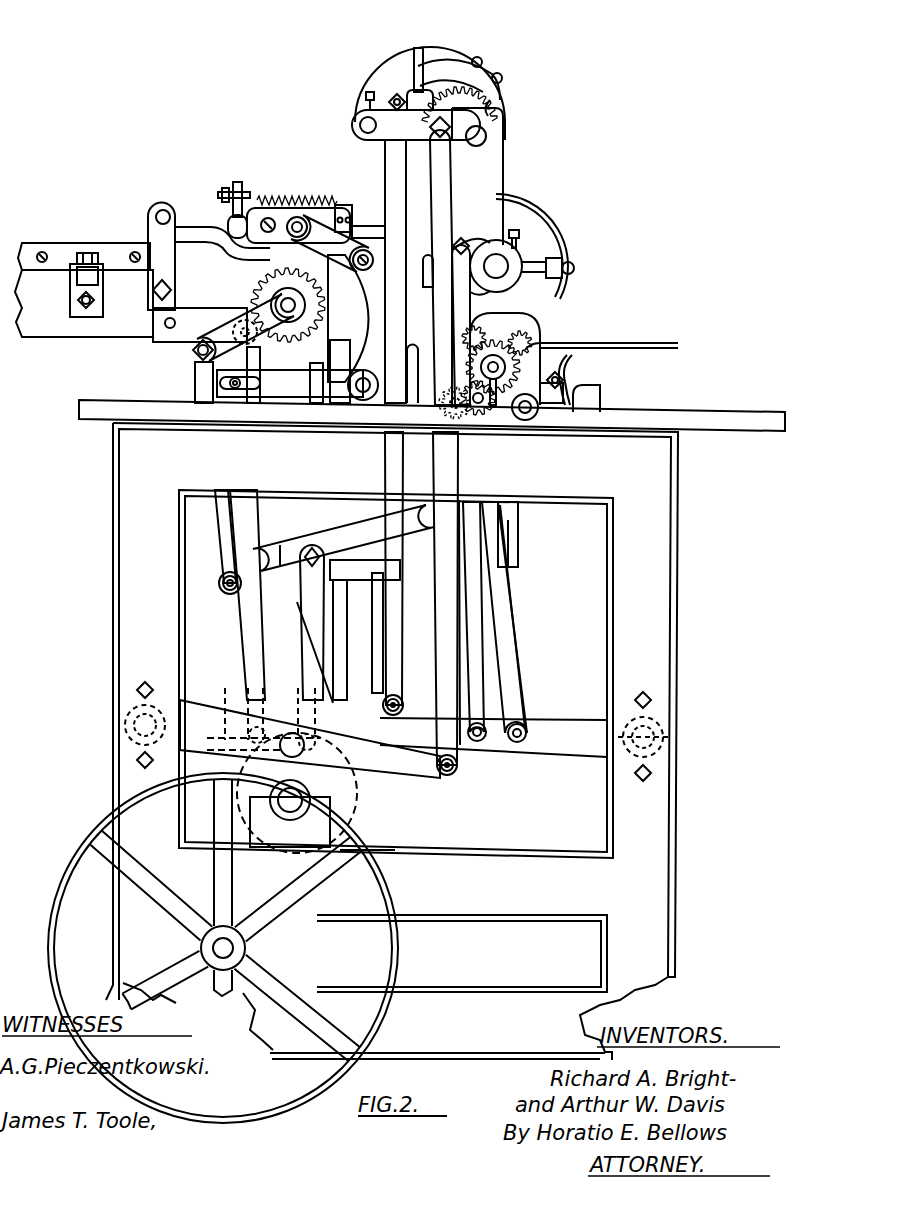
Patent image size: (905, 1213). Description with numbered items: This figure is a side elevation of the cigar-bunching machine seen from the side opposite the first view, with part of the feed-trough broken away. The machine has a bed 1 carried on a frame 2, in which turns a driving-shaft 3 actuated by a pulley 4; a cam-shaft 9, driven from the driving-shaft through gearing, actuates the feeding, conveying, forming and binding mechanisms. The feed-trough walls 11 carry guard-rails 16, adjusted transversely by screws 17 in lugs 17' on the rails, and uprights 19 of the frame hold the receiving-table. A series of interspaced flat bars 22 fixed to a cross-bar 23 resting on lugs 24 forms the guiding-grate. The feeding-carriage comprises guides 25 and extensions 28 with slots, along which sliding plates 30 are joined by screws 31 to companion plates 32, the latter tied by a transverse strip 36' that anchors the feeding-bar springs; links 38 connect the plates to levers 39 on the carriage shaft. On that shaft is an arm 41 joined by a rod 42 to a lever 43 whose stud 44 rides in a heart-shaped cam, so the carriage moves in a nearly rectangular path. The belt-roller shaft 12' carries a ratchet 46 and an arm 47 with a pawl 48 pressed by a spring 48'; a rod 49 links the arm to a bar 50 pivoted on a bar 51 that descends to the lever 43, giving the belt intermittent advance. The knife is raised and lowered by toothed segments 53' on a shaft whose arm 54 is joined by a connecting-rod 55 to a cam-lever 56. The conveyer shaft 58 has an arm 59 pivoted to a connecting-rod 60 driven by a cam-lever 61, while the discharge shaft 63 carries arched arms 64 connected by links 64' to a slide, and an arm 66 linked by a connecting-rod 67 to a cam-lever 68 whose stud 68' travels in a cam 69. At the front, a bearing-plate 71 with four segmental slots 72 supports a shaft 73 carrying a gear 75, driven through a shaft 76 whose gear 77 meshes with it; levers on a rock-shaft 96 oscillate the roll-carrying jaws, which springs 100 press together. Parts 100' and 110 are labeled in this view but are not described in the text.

The bed 1 is at (745, 414).
The frame 2 is at (114, 595).
The driving-shaft 3 is at (233, 948).
The pulley 4 is at (75, 862).
The cam-shaft 9 is at (288, 805).
The walls 11 is at (45, 318).
The shaft 12' is at (275, 297).
The guard-rail 16 is at (36, 243).
The screws 17 is at (83, 219).
The lugs 17' is at (73, 249).
The uprights 19 is at (497, 145).
The flat bars 22 is at (190, 230).
The cross-bar 23 is at (160, 208).
The lugs 24 is at (155, 235).
The guides 25 is at (340, 512).
The extensions or guides 28 is at (245, 200).
The sliding plates 30 is at (230, 228).
The screws 31 is at (275, 218).
The sliding plates 32 is at (322, 198).
The transverse strip 36' is at (360, 206).
The links 38 is at (345, 275).
The levers 39 is at (375, 320).
The arm 41 is at (305, 395).
The rod 42 is at (250, 626).
The lever 43 is at (222, 700).
The stud 44 is at (213, 742).
The ratchet 46 is at (300, 320).
The arm 47 is at (196, 355).
The pawl 48 is at (200, 311).
The spring 48' is at (217, 322).
The rod 49 is at (225, 527).
The bar 50 is at (284, 540).
The bar 51 is at (305, 633).
The toothed segments 53' is at (513, 101).
The arm 54 is at (412, 98).
The connecting-rod 55 is at (400, 290).
The cam-lever 56 is at (333, 703).
The shaft 58 is at (500, 267).
The arm 59 is at (518, 218).
The connecting-rod 60 is at (472, 625).
The cam-lever 61 is at (462, 740).
The shaft 63 is at (364, 120).
The arched arms 64 is at (431, 73).
The links 64' is at (513, 54).
The arm 66 is at (400, 128).
The connecting-rod 67 is at (440, 210).
The cam-lever 68 is at (318, 760).
The stud 68' is at (324, 793).
The cam 69 is at (380, 843).
The bearing-plate 71 is at (520, 343).
The segmental slots 72 is at (497, 367).
The shaft 73 is at (570, 358).
The gear 75 is at (492, 355).
The shaft 76 is at (435, 450).
The gear 77 is at (480, 405).
The rock-shaft 96 is at (668, 737).
The springs 100 is at (608, 373).
The gear 100' is at (404, 427).
The rod 110 is at (668, 345).